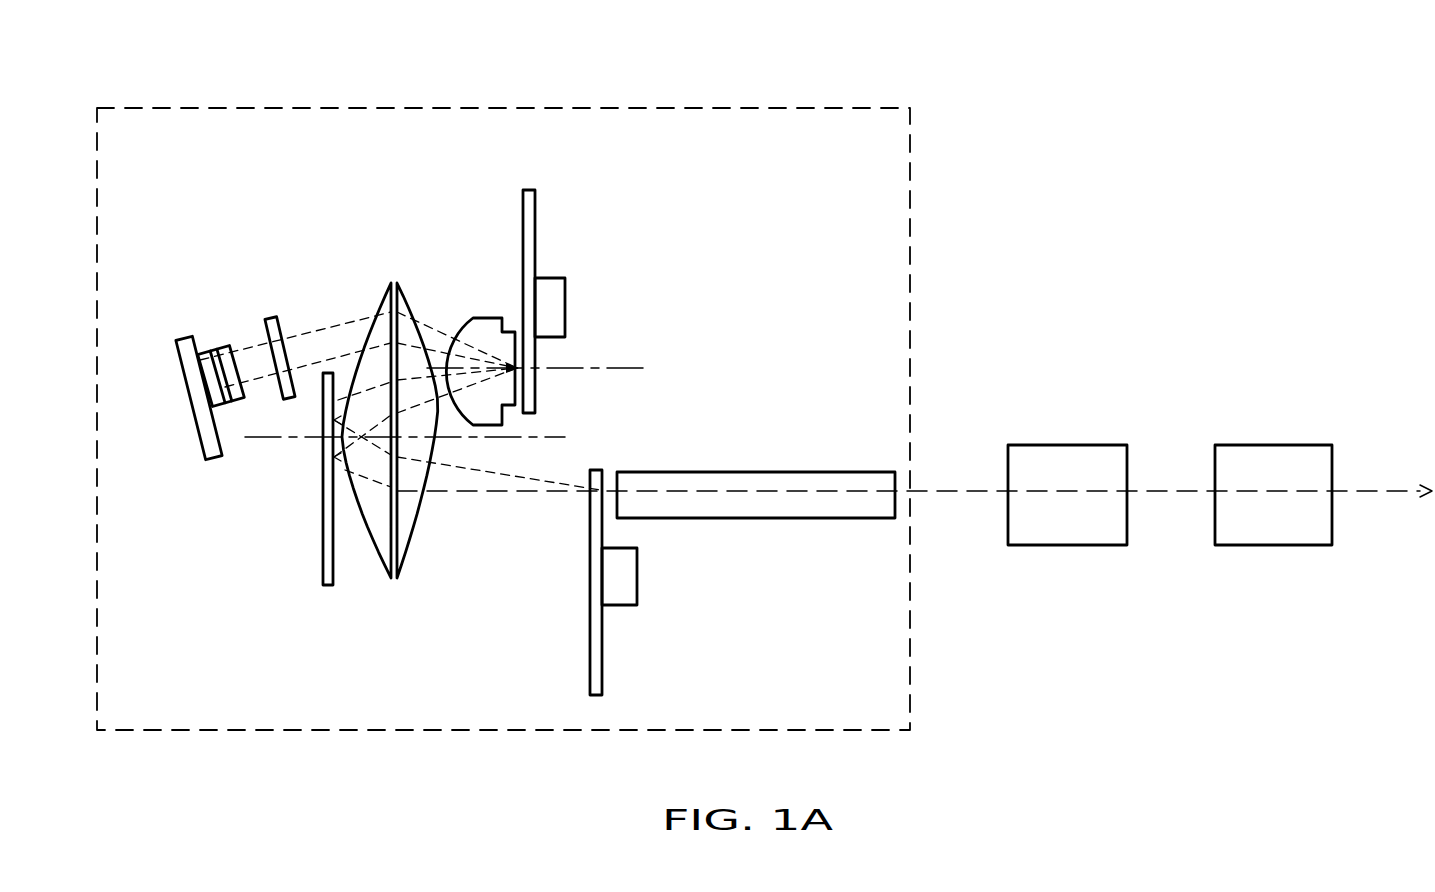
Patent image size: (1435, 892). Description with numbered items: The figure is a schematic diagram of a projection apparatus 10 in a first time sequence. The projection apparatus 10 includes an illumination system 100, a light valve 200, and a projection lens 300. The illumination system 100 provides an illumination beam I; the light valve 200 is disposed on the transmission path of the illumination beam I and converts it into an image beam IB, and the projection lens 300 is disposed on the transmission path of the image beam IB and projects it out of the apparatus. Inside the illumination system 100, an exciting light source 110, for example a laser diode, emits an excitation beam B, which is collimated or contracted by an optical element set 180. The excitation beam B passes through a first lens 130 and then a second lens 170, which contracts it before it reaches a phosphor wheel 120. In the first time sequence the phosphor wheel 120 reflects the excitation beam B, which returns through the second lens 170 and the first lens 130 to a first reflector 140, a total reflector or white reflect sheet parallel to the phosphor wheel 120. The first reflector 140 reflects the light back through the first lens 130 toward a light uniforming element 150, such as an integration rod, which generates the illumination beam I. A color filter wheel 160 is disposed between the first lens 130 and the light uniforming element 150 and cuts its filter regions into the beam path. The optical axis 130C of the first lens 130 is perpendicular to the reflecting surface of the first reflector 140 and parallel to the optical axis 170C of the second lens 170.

The projection apparatus 10 is at (1352, 734).
The illumination system 100 is at (410, 108).
The exciting light source 110 is at (177, 360).
The phosphor wheel 120 is at (530, 188).
The first lens 130 is at (388, 580).
The optical axis of the first lens 130C is at (550, 437).
The first reflector 140 is at (323, 555).
The light uniforming element 150 is at (760, 474).
The color filter wheel 160 is at (590, 640).
The second lens 170 is at (487, 320).
The optical axis of the second lens 170C is at (627, 363).
The optical element set 180 is at (270, 316).
The light valve 200 is at (1068, 447).
The projection lens 300 is at (1277, 447).
The excitation beam B is at (323, 330).
The illumination beam I is at (943, 490).
The image beam IB is at (1373, 490).